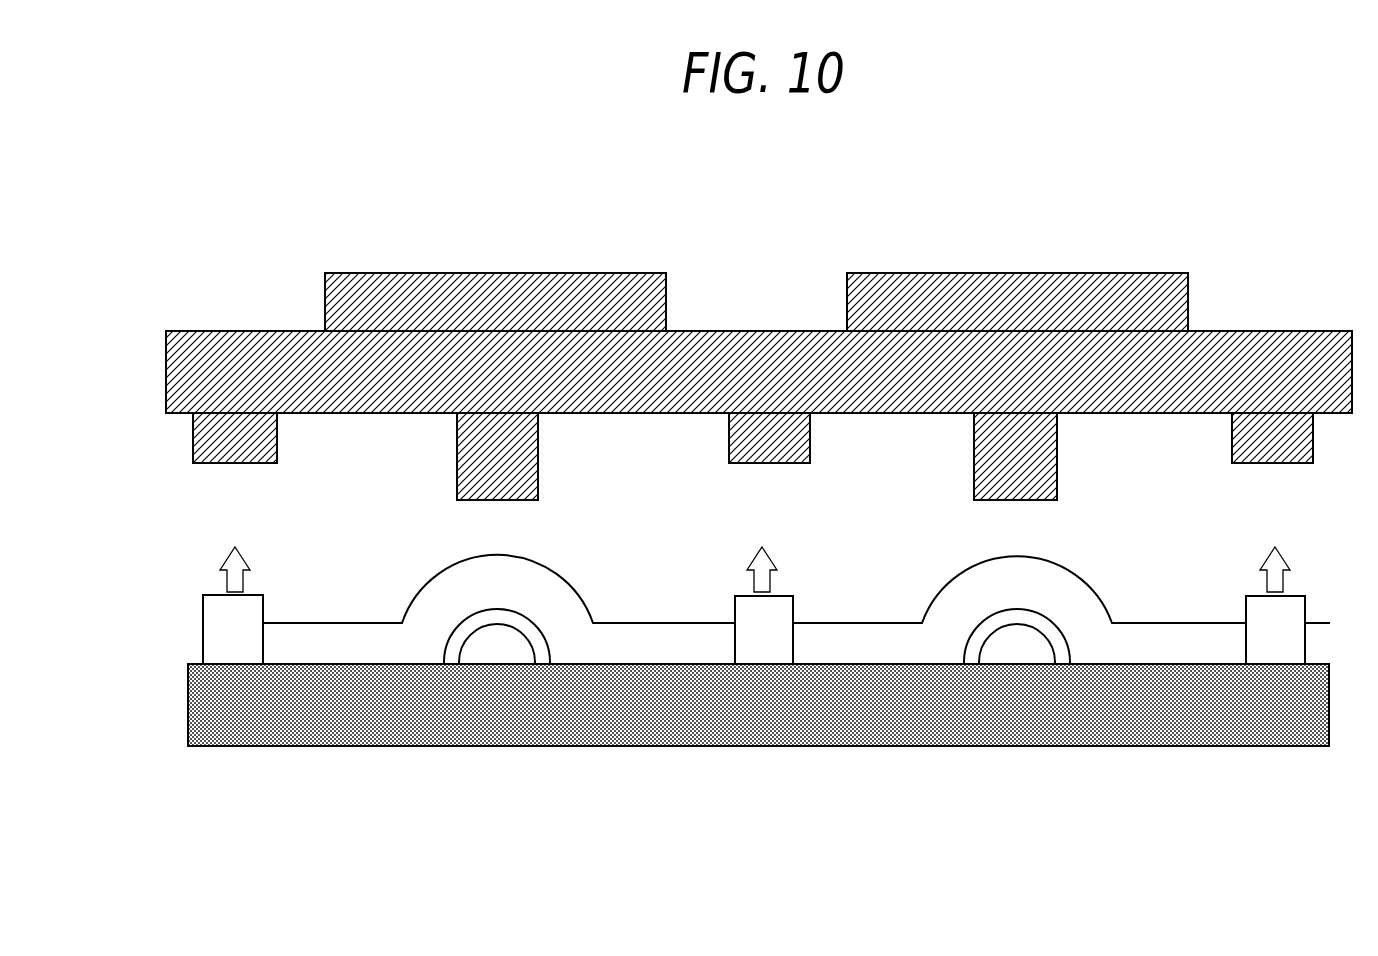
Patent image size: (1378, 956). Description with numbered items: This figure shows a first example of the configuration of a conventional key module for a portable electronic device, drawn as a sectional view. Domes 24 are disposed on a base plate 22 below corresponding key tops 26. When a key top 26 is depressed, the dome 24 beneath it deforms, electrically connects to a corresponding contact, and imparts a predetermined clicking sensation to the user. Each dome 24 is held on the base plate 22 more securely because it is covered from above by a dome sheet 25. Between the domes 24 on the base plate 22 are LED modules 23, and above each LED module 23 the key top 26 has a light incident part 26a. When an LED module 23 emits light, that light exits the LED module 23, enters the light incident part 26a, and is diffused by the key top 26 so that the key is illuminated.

The base plate 22 is at (468, 747).
The LED module 23 is at (200, 630).
The dome 24 is at (1043, 622).
The dome sheet 25 is at (825, 623).
The key top 26 is at (428, 273).
The light incident part 26a is at (237, 465).